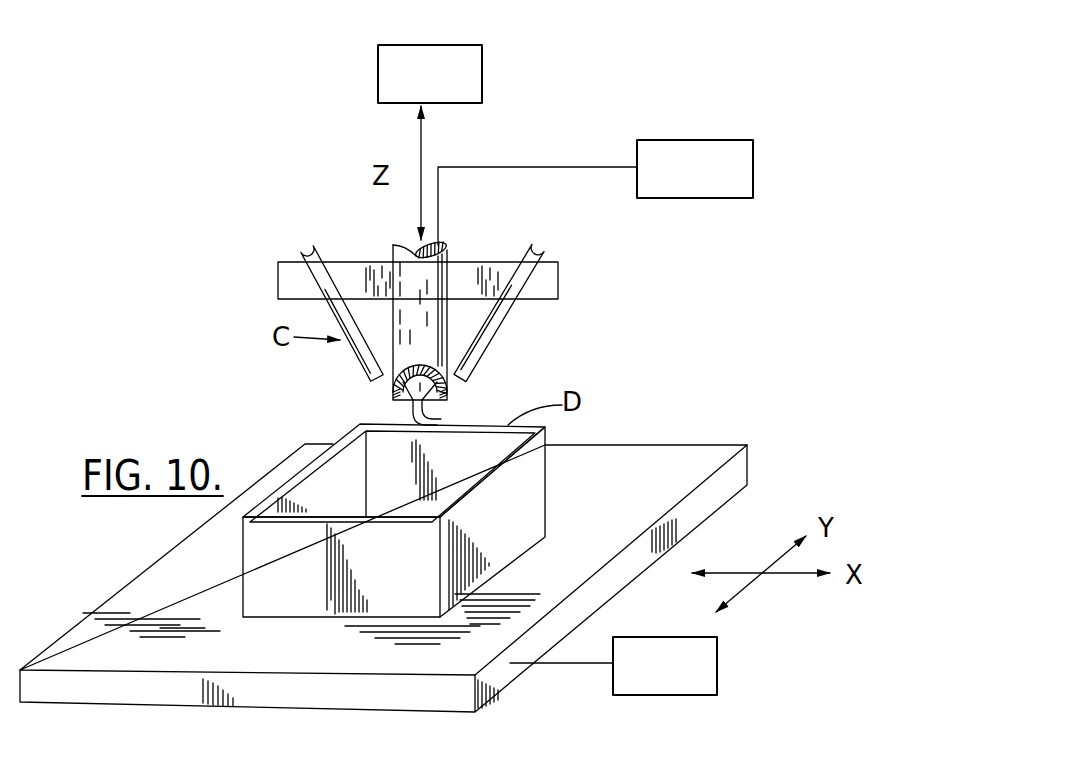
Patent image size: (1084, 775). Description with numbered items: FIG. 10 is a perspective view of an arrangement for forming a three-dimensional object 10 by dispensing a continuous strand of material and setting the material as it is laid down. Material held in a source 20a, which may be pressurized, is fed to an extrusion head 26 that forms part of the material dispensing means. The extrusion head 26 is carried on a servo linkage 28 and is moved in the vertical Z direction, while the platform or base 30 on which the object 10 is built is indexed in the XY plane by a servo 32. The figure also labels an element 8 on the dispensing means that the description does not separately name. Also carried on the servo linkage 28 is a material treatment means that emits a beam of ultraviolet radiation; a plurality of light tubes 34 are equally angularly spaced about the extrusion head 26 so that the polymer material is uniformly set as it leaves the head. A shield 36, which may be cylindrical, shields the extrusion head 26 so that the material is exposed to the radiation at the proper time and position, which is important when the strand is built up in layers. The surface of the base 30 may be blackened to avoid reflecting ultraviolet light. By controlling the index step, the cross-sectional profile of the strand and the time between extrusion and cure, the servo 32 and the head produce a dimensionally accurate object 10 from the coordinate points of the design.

The dispensing head 8 is at (434, 327).
The object 10 is at (530, 497).
The source 20a is at (732, 140).
The extrusion head 26 is at (433, 350).
The servo linkage 28 is at (558, 283).
The platform or base 30 is at (723, 445).
The servo 32 is at (482, 88).
The light tubes 34 is at (318, 256).
The shield means 36 is at (386, 388).